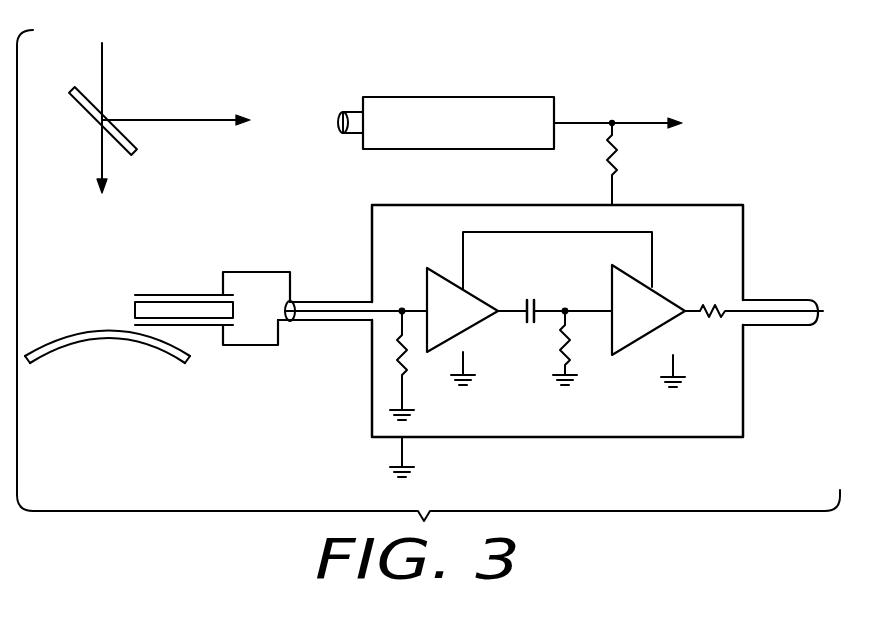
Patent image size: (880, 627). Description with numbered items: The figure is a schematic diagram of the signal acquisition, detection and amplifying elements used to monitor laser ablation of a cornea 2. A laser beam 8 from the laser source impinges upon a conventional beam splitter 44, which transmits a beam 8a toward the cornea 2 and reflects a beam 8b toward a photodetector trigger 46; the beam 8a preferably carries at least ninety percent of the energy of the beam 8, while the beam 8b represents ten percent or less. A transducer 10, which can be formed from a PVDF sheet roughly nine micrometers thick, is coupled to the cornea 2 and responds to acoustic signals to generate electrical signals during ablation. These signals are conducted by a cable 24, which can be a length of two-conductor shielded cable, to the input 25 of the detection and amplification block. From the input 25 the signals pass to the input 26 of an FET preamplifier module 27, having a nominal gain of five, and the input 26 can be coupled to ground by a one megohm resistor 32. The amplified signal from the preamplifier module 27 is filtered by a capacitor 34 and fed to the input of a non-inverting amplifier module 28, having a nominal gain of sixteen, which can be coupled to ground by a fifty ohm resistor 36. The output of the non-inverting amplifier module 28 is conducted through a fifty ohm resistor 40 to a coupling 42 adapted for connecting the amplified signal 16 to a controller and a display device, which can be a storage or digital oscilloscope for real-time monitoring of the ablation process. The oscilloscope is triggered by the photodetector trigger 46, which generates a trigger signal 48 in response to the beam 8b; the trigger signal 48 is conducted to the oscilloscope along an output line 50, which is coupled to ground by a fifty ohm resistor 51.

The beam 8 is at (103, 63).
The beam 8a is at (103, 166).
The beam 8b is at (199, 119).
The beam splitter 44 is at (87, 103).
The photodetector trigger 46 is at (415, 97).
The trigger signal 48 is at (593, 119).
The output line 50 is at (656, 119).
The 50 ohm resistor 51 is at (606, 156).
The transducer 10 is at (164, 292).
The cable 24 is at (234, 272).
The cornea 2 is at (130, 343).
The input 25 is at (352, 285).
The input 26 is at (417, 308).
The FET preamplifier module 27 is at (456, 322).
The 1 megohm resistor 32 is at (398, 360).
The capacitor 34 is at (528, 301).
The 50 ohm resistor 36 is at (562, 346).
The non-inverting amplifier module 28 is at (643, 323).
The 50 ohm resistor 40 is at (715, 317).
The amplified signal 16 is at (826, 277).
The coupling 42 is at (794, 326).